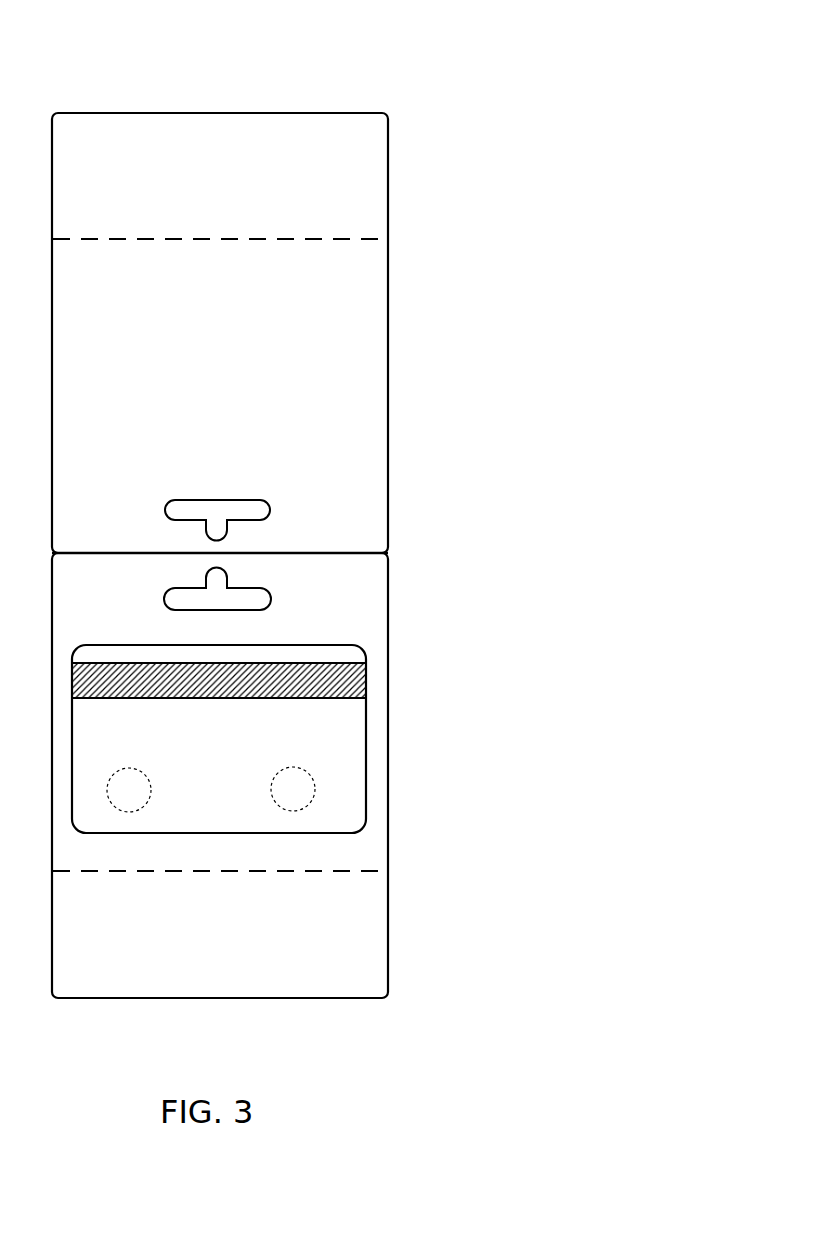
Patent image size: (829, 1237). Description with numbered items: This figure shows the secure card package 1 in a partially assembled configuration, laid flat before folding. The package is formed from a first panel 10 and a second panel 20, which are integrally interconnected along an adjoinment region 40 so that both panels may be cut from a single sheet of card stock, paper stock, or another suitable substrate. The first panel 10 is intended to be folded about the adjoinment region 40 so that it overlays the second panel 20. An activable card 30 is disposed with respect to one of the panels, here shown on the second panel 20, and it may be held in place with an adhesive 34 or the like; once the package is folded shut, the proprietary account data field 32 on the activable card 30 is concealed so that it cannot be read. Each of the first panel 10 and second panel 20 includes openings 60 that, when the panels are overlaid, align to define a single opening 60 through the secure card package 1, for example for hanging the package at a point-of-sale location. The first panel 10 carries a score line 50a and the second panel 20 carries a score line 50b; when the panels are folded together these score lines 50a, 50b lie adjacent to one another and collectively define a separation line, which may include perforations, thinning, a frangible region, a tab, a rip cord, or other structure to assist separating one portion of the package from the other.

The secure card package 1 is at (397, 93).
The first panel 10 is at (370, 329).
The second panel 20 is at (368, 609).
The activable card 30 is at (338, 752).
The proprietary account data field 32 is at (232, 692).
The adhesive 34 is at (129, 790).
The adjoinment region 40 is at (358, 553).
The score line 50a is at (355, 240).
The score line 50b is at (350, 870).
The openings 60 is at (237, 516).